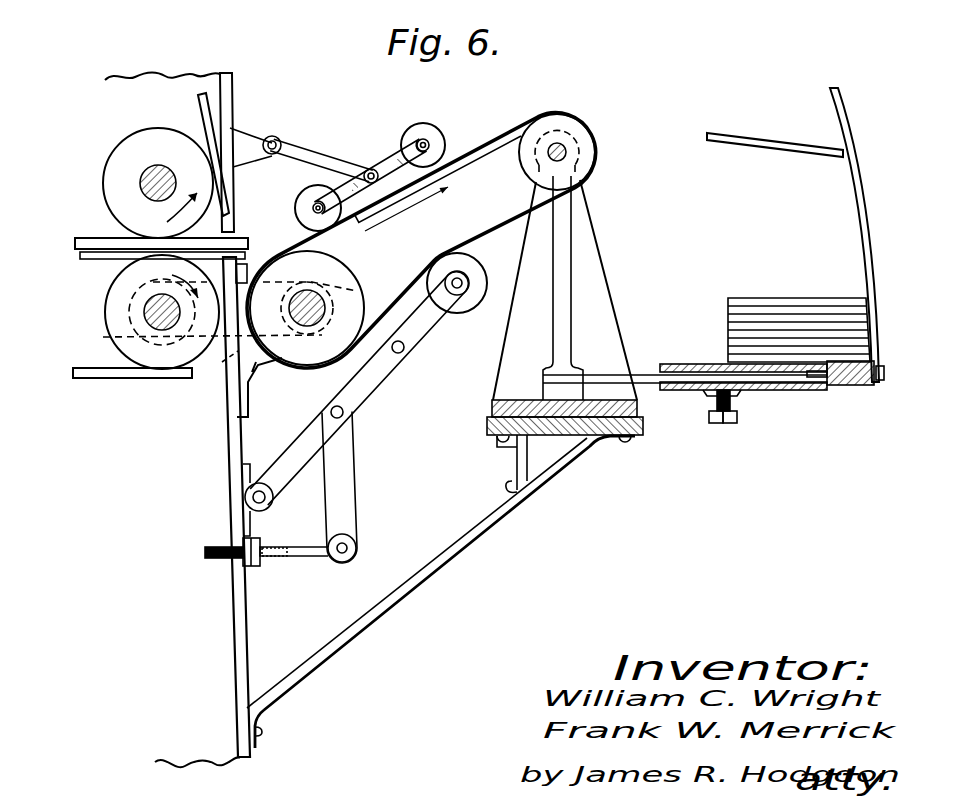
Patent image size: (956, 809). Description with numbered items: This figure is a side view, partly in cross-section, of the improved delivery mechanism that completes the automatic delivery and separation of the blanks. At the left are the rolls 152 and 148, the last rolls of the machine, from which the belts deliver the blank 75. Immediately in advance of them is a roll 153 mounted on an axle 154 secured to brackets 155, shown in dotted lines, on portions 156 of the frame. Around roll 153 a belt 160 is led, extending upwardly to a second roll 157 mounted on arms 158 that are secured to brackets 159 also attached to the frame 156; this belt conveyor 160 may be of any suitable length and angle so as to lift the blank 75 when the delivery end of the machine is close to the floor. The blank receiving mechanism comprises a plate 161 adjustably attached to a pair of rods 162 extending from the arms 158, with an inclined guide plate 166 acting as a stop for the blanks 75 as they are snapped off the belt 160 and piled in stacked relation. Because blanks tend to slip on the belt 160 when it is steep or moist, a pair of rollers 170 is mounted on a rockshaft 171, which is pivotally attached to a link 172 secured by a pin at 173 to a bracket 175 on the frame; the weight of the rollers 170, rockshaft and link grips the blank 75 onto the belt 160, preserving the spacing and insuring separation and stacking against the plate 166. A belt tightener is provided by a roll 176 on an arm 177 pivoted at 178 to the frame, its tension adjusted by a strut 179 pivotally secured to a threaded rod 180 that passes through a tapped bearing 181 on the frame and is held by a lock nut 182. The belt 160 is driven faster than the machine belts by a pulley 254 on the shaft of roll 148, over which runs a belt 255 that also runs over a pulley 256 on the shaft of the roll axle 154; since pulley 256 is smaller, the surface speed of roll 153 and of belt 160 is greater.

The blank 75 is at (463, 147).
The roll 148 is at (117, 320).
The roll 152 is at (100, 192).
The roll 153 is at (343, 280).
The axle 154 is at (307, 318).
The brackets 155 is at (228, 386).
The frame portions 156 is at (235, 440).
The second roll 157 is at (573, 130).
The arms 158 is at (580, 243).
The brackets 159 is at (423, 573).
The belt 160 is at (514, 132).
The plate 161 is at (835, 384).
The rods 162 is at (775, 374).
The inclined guide plate 166 is at (841, 96).
The rollers 170 is at (318, 200).
The rockshaft 171 is at (388, 165).
The link 172 is at (297, 152).
The pin 173 is at (272, 136).
The bracket 175 is at (238, 118).
The roll 176 is at (463, 313).
The arm 177 is at (367, 375).
The pivot 178 is at (250, 507).
The strut 179 is at (340, 467).
The threaded rod 180 is at (300, 550).
The tapped bearing 181 is at (247, 563).
The lock nut 182 is at (258, 567).
The pulley 254 is at (200, 348).
The belt 255 is at (215, 366).
The pulley 256 is at (345, 300).